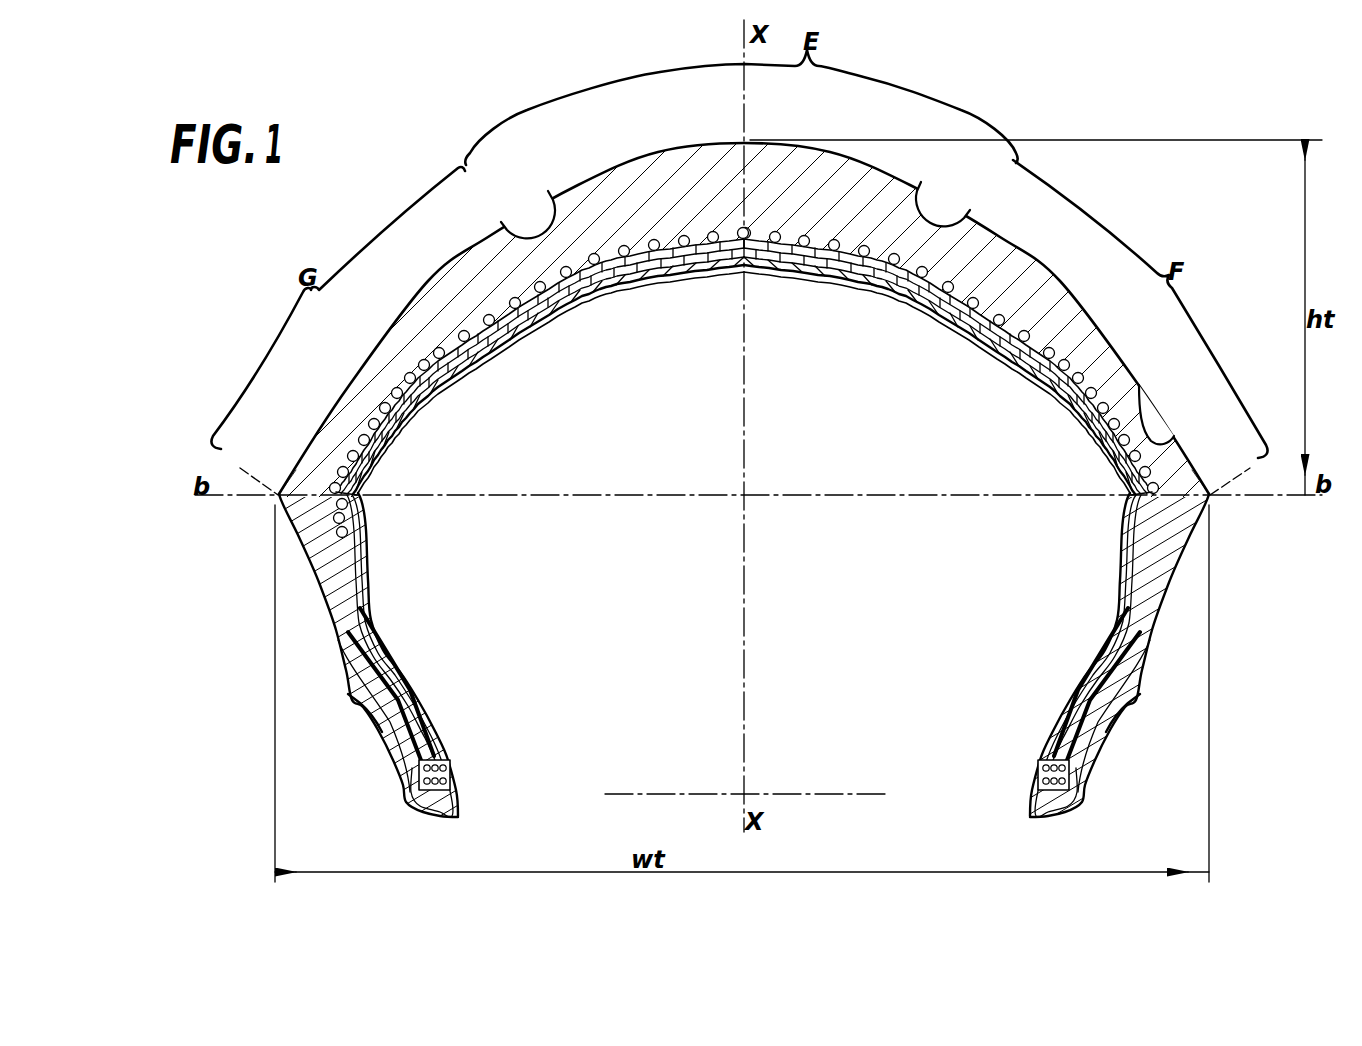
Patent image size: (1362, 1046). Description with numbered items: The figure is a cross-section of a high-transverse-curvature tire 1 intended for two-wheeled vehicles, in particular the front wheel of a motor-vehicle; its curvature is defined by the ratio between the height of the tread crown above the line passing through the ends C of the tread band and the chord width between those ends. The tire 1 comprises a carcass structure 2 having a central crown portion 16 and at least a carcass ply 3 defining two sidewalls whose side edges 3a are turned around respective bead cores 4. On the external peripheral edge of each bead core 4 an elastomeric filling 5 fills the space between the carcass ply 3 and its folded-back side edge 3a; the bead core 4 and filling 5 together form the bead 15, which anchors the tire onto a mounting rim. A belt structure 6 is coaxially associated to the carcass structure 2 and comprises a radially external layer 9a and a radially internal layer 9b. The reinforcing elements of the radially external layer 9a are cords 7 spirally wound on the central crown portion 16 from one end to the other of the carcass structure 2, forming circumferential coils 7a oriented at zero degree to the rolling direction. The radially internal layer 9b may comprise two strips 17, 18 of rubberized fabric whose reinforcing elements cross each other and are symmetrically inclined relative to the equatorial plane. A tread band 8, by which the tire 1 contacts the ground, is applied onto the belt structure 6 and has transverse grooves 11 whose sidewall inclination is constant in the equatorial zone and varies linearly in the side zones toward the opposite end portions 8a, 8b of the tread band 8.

The high-transverse-curvature tire 1 is at (893, 132).
The carcass structure 2 is at (338, 568).
The carcass ply 3 is at (983, 338).
The side edge of carcass ply 3a is at (368, 692).
The bead core 4 is at (416, 783).
The elastomeric filling 5 is at (416, 694).
The belt structure 6 is at (1130, 526).
The cords 7 is at (628, 258).
The circumferential coils 7a is at (893, 268).
The tread band 8 is at (1068, 292).
The end portion of tread band 8a is at (1193, 460).
The end portion of tread band 8b is at (302, 460).
The radially external layer 9a is at (1086, 442).
The radially internal layer 9b is at (357, 527).
The grooves 11 is at (522, 226).
The bead 15 is at (466, 792).
The central crown portion 16 is at (815, 270).
The strip of rubberized fabric 17 is at (636, 276).
The strip of rubberized fabric 18 is at (690, 266).
The ends of the tread band C is at (276, 505).